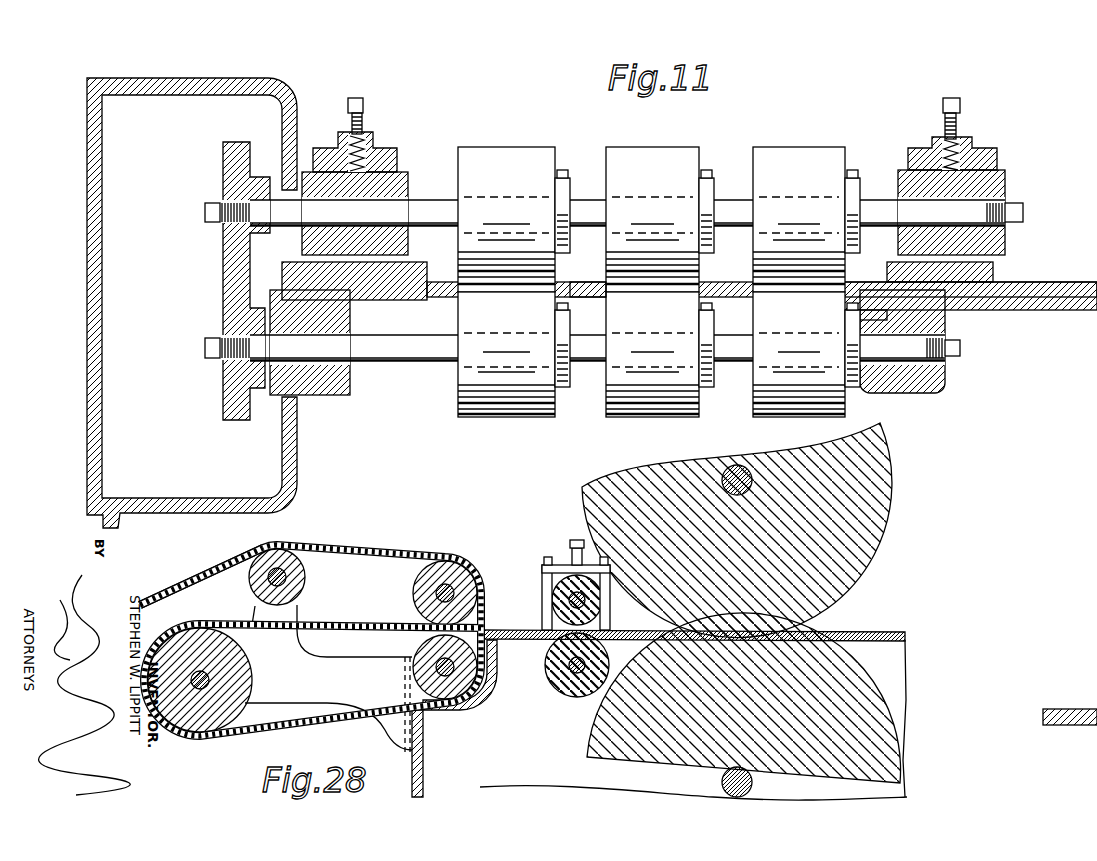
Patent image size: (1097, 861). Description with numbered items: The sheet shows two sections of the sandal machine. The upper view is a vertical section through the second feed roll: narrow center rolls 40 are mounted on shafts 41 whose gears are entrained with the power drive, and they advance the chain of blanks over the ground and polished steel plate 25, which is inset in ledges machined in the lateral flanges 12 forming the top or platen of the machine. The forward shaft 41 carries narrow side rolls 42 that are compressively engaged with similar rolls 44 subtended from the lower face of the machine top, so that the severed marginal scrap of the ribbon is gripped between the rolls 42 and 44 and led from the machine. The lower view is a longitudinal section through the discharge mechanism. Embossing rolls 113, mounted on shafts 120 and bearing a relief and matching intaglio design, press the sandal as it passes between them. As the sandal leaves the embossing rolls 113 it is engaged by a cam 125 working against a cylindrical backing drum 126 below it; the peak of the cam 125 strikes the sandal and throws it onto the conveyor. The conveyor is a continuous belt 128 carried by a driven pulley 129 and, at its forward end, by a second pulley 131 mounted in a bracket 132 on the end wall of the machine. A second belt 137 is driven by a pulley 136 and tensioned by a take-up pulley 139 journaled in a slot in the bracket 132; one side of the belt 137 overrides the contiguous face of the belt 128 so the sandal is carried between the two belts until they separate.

In FIG. 11, the lateral opposed flanges 12 is at (1055, 283).
In FIG. 11, the steel plate 25 is at (590, 286).
In FIG. 11, the center rolls 40 is at (672, 155).
In FIG. 11, the shafts 41 is at (733, 200).
In FIG. 11, the side rolls 42 is at (513, 158).
In FIG. 11, the lower rolls 44 is at (497, 418).
In FIG. 28, the embossing rolls 113 is at (850, 565).
In FIG. 28, the shafts 120 is at (755, 482).
In FIG. 28, the cam 125 is at (543, 623).
In FIG. 28, the cylindrical backing drum 126 is at (553, 686).
In FIG. 28, the continuous belt 128 is at (355, 633).
In FIG. 28, the pulley 129 is at (496, 692).
In FIG. 28, the second pulley 131 is at (248, 675).
In FIG. 28, the bracket 132 is at (368, 690).
In FIG. 28, the pulley 136 is at (413, 597).
In FIG. 28, the belt 137 is at (233, 567).
In FIG. 28, the take-up pulley 139 is at (302, 572).